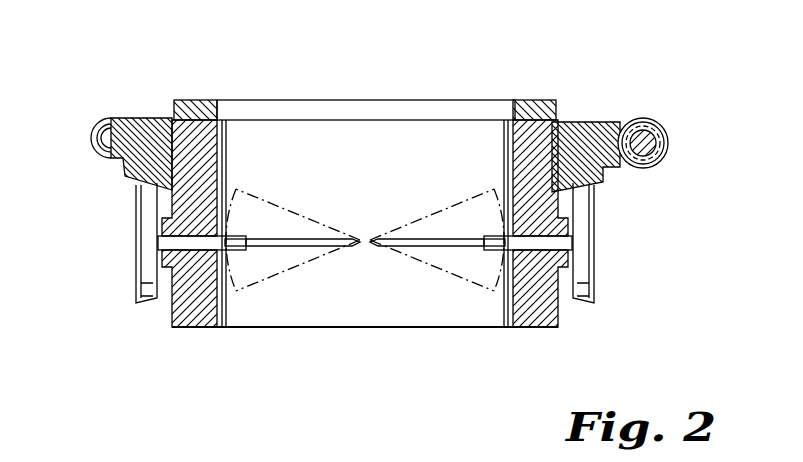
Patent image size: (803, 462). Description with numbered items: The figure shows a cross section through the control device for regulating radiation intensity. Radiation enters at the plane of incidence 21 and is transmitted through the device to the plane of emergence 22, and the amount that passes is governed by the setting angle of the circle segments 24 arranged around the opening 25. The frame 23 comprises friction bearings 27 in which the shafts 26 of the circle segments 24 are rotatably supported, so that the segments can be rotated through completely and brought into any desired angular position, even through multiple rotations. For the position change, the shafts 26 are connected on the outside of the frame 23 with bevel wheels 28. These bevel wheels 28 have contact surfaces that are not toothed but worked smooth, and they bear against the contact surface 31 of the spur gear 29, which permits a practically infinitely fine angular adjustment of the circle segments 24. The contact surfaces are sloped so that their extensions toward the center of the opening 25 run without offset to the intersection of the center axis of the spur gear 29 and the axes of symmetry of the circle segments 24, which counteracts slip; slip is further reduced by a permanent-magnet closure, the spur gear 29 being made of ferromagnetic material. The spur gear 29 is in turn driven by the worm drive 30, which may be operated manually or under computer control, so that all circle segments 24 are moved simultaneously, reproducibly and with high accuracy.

The plane of incidence 21 is at (410, 100).
The plane of emergence 22 is at (453, 330).
The frame 23 is at (195, 313).
The circle segments 24 is at (280, 245).
The opening 25 is at (378, 347).
The shafts 26 is at (163, 238).
The friction bearings 27 is at (165, 267).
The bevel wheels 28 is at (582, 268).
The spur gear 29 is at (603, 182).
The worm drive 30 is at (658, 142).
The contact surface 31 is at (137, 188).